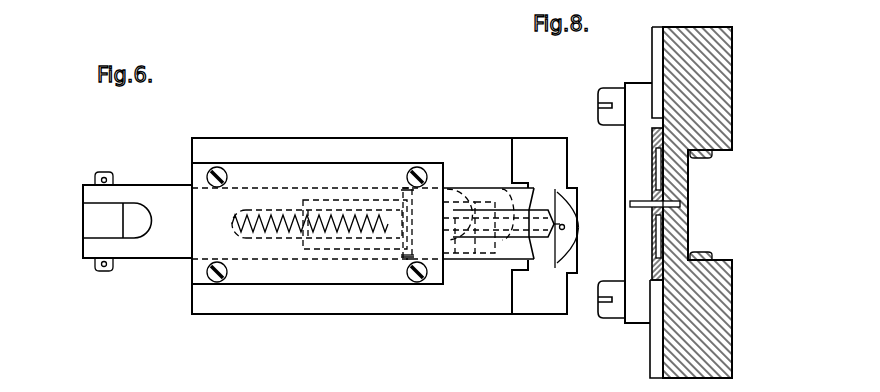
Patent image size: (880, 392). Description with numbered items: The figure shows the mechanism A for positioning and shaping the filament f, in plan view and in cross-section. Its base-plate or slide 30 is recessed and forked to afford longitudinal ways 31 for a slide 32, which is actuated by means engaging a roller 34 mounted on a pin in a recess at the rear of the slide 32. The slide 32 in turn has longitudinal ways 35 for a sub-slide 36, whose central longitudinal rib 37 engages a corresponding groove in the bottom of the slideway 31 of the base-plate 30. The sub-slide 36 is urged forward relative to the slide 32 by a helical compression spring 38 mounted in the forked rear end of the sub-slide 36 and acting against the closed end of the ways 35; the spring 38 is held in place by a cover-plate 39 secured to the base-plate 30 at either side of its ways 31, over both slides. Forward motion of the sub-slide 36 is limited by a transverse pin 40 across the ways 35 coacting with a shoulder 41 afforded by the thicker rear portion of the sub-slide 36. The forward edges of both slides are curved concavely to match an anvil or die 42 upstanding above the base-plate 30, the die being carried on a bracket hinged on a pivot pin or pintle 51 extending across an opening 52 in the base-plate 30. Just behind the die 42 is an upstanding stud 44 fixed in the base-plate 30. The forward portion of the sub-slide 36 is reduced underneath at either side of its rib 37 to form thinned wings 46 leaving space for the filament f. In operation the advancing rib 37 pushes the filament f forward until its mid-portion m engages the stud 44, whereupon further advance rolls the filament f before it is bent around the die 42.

In FIG. 6, the base-plate or slide 30 is at (429, 138).
In FIG. 8, the base-plate or slide 30 is at (652, 70).
In FIG. 6, the longitudinal ways 31 is at (525, 192).
In FIG. 6, the slide 32 is at (170, 261).
In FIG. 8, the slide 32 is at (652, 152).
In FIG. 6, the roller 34 is at (86, 218).
In FIG. 6, the longitudinal ways 35 is at (462, 210).
In FIG. 6, the sub-slide 36 is at (473, 249).
In FIG. 8, the sub-slide 36 is at (689, 218).
In FIG. 6, the central longitudinal rib 37 is at (504, 208).
In FIG. 8, the central longitudinal rib 37 is at (664, 191).
In FIG. 6, the helical compression spring 38 is at (288, 232).
In FIG. 6, the cover-plate 39 is at (368, 285).
In FIG. 8, the cover-plate 39 is at (625, 136).
In FIG. 6, the transverse pin 40 is at (400, 200).
In FIG. 6, the shoulder 41 is at (405, 238).
In FIG. 6, the anvil or die 42 is at (570, 218).
In FIG. 6, the upstanding stud 44 is at (570, 233).
In FIG. 8, the upstanding stud 44 is at (681, 204).
In FIG. 8, the wings 46 is at (656, 186).
In FIG. 8, the pivot pin or pintle 51 is at (713, 157).
In FIG. 6, the opening 52 is at (320, 200).
In FIG. 6, the mechanism A is at (375, 89).
In FIG. 6, the filament f is at (558, 200).
In FIG. 6, the mid-portion m is at (566, 228).